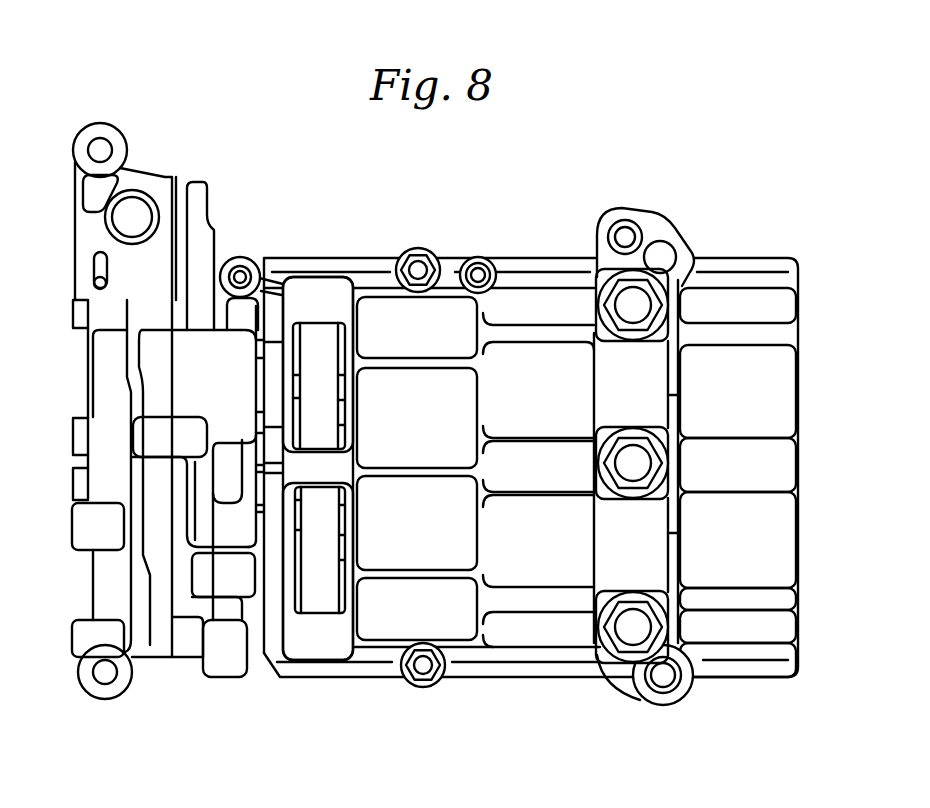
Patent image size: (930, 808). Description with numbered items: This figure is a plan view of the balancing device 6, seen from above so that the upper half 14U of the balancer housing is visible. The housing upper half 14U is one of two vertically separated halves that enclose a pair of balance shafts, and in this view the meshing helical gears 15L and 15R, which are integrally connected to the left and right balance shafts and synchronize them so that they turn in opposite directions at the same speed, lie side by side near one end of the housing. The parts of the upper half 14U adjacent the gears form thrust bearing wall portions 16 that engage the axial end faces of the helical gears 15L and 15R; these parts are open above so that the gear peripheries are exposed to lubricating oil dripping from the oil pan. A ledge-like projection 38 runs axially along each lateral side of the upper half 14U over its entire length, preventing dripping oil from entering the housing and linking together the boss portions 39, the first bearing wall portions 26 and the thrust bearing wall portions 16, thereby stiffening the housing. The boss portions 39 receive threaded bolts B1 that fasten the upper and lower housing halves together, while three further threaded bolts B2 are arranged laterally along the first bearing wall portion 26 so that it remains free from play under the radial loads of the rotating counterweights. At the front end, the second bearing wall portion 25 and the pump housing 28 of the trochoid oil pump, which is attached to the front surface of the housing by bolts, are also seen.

The balancing device 6 is at (560, 198).
The upper half of balancer housing 14U is at (782, 377).
The left helical gear 15L is at (315, 337).
The right helical gear 15R is at (318, 605).
The thrust bearing wall portion 16 is at (300, 422).
The second bearing wall portion 25 is at (233, 352).
The first bearing wall portion 26 is at (607, 562).
The pump housing 28 is at (103, 357).
The ledge-like projection 38 is at (350, 265).
The boss portion 39 is at (438, 256).
The threaded bolt B1 is at (419, 262).
The threaded bolt B2 is at (640, 462).